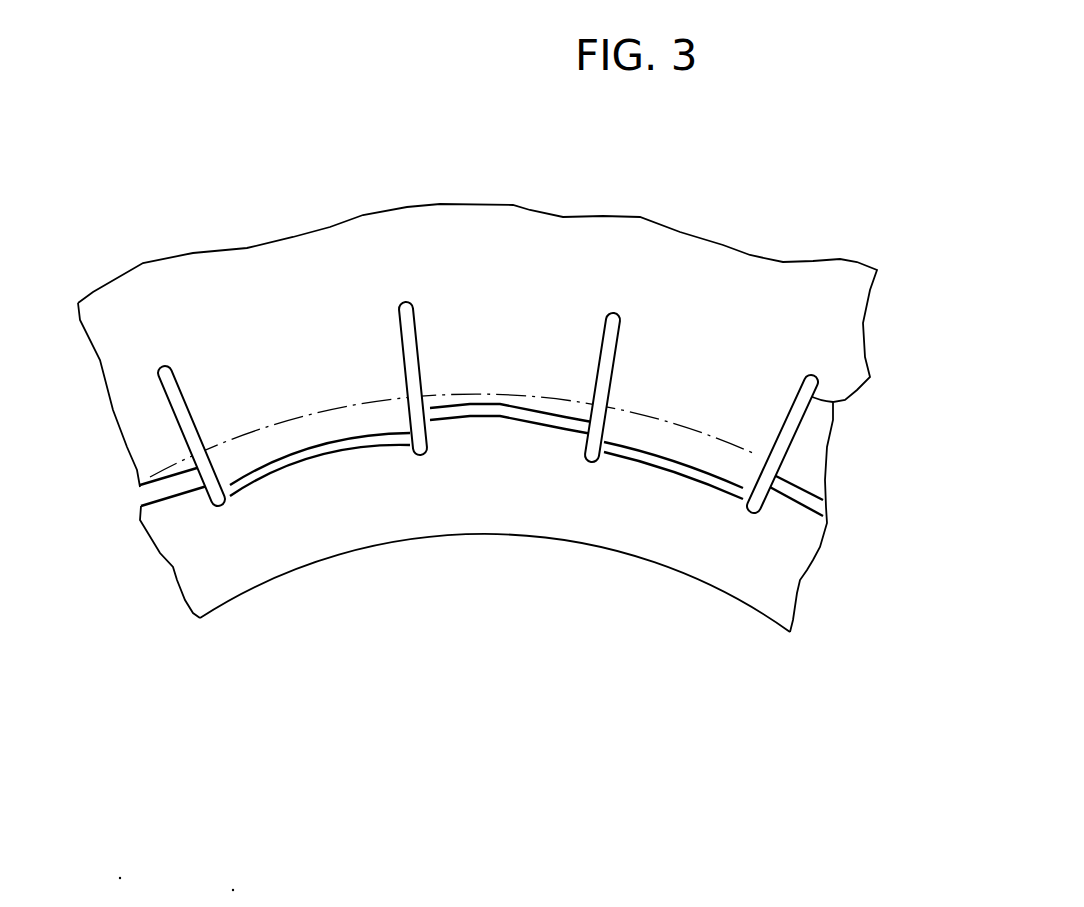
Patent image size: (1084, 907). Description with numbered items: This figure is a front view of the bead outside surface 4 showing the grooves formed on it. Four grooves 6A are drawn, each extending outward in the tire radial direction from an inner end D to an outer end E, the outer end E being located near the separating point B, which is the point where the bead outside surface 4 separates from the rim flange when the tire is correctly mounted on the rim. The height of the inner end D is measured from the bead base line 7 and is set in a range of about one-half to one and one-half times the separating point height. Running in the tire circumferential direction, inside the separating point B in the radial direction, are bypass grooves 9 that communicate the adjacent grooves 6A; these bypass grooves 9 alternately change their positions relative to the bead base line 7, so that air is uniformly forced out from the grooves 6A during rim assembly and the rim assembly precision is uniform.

The bead outside surface 4 is at (665, 363).
The grooves 6A is at (178, 385).
The bead base line 7 is at (415, 537).
The bypass grooves 9 is at (315, 458).
The outer end E is at (404, 303).
The inner end D is at (413, 455).
The separating point B is at (255, 435).